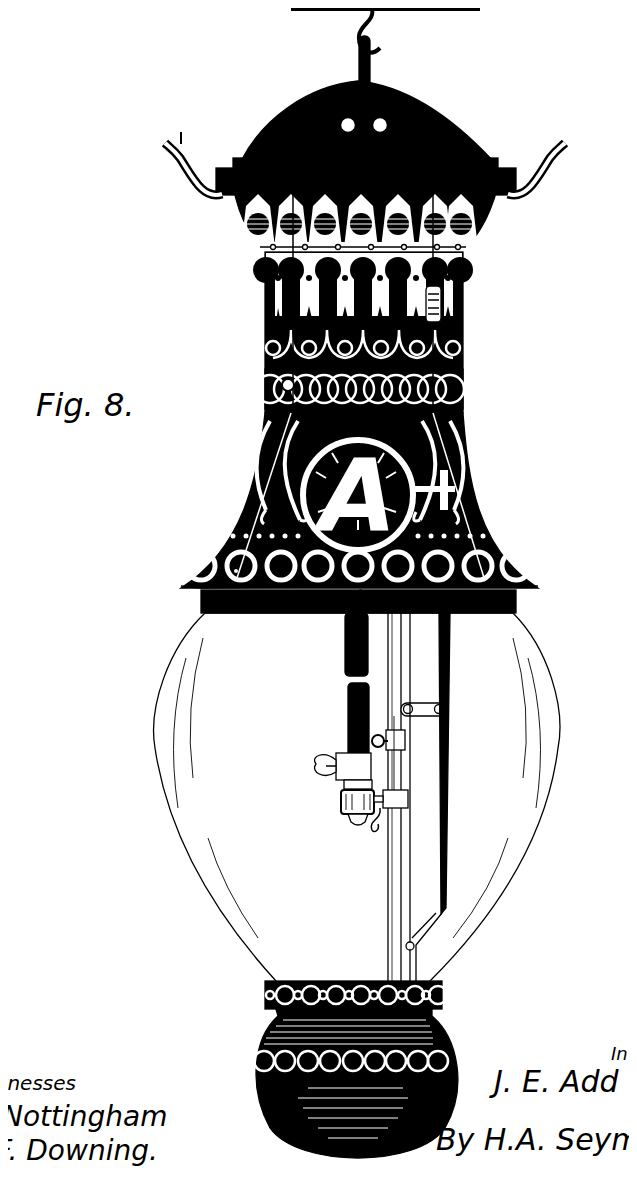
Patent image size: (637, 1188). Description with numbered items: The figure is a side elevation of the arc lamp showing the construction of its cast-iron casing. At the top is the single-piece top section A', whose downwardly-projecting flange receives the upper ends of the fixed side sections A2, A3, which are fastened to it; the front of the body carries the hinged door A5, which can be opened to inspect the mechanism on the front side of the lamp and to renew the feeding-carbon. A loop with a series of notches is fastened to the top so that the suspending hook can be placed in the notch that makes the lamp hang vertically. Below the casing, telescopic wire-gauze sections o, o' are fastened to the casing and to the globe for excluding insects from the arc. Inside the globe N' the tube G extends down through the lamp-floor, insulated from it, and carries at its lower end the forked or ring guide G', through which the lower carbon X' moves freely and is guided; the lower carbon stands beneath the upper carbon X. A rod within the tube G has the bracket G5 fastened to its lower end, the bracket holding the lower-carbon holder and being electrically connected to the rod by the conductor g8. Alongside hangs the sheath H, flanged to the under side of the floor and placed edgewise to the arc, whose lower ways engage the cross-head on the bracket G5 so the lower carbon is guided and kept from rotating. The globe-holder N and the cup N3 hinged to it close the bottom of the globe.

The top section A' is at (365, 144).
The fixed side section A2 is at (342, 332).
The fixed side section A3 is at (457, 376).
The hinged door A5 is at (262, 240).
The telescopic wire-gauze section o is at (446, 600).
The telescopic wire-gauze section o' is at (272, 602).
The glass globe N' is at (357, 797).
The upper carbon X is at (346, 644).
The lower carbon X' is at (346, 720).
The tube G is at (429, 797).
The forked or ring guide G' is at (359, 753).
The bracket G5 is at (333, 794).
The conductor g8 is at (373, 827).
The sheath H is at (436, 749).
The globe base ring N is at (343, 995).
The bottom cup N3 is at (430, 1068).